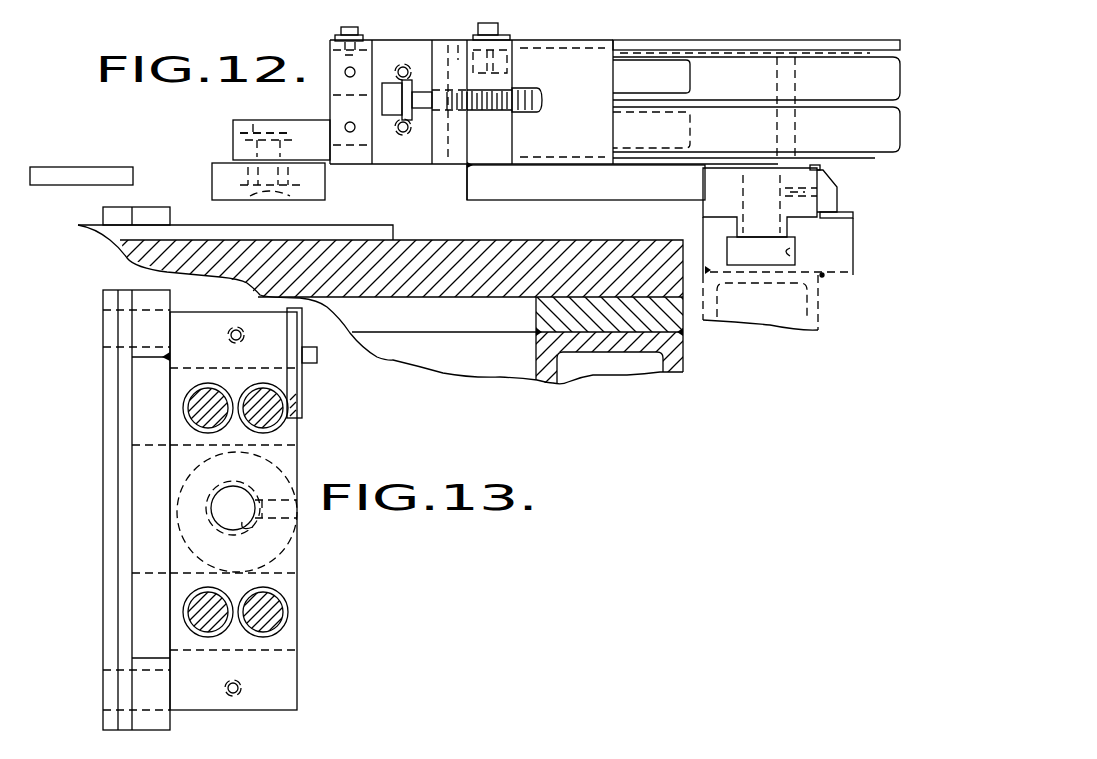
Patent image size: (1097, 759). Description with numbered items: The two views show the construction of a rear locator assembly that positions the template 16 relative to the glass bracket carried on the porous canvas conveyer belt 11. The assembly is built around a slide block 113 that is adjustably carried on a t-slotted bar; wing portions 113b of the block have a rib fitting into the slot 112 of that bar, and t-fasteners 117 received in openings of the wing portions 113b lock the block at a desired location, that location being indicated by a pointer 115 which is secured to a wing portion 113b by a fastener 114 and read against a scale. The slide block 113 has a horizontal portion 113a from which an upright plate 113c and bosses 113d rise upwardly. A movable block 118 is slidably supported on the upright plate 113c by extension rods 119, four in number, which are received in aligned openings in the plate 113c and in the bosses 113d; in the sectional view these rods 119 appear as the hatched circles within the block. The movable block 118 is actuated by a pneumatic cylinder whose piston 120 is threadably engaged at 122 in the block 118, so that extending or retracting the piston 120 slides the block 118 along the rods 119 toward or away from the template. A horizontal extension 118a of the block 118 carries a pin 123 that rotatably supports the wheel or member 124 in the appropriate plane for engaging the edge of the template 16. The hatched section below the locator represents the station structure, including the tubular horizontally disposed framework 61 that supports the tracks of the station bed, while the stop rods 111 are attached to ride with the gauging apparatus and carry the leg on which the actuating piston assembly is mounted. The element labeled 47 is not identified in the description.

In FIG. 12, the porous canvas conveyer belt 11 is at (322, 228).
In FIG. 12, the template cut 16 is at (103, 217).
In FIG. 12, the support member 47 is at (478, 280).
In FIG. 12, the tubular horizontally disposed framework 61 is at (678, 366).
In FIG. 12, the stop rods 111 is at (828, 231).
In FIG. 12, the slot 112 is at (792, 252).
In FIG. 12, the slide block 113 is at (658, 204).
In FIG. 12, the horizontal portion 113a is at (540, 182).
In FIG. 13, the horizontal portion 113a is at (138, 480).
In FIG. 12, the wing portions 113b is at (717, 200).
In FIG. 13, the wing portions 113b is at (148, 327).
In FIG. 12, the upright plate 113c is at (488, 153).
In FIG. 12, the bosses 113d is at (593, 143).
In FIG. 12, the fastener 114 is at (840, 193).
In FIG. 12, the pointer 115 is at (822, 184).
In FIG. 12, the t-fasteners 117 is at (755, 253).
In FIG. 12, the movable block 118 is at (405, 152).
In FIG. 12, the horizontal extension 118a is at (317, 107).
In FIG. 12, the extension rods 119 is at (680, 77).
In FIG. 13, the extension rods 119 is at (270, 424).
In FIG. 13, the piston 120 is at (237, 527).
In FIG. 13, the threaded engagement 122 is at (255, 527).
In FIG. 12, the pin 123 is at (233, 133).
In FIG. 12, the template engaging member 124 is at (217, 170).